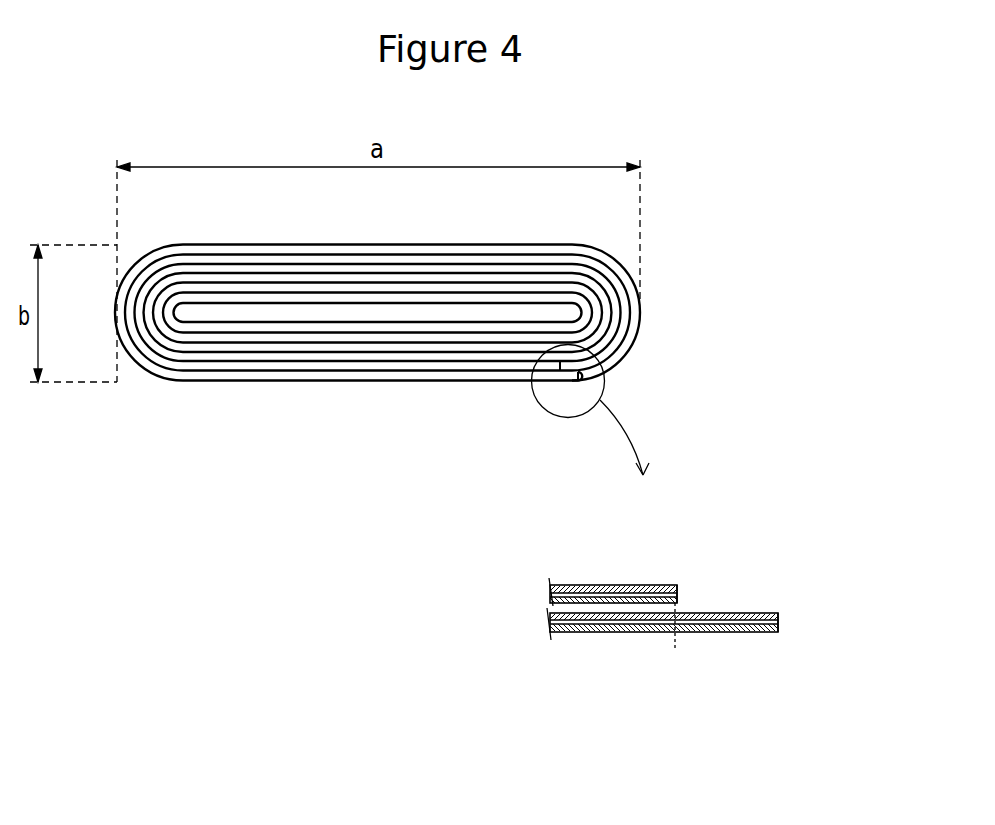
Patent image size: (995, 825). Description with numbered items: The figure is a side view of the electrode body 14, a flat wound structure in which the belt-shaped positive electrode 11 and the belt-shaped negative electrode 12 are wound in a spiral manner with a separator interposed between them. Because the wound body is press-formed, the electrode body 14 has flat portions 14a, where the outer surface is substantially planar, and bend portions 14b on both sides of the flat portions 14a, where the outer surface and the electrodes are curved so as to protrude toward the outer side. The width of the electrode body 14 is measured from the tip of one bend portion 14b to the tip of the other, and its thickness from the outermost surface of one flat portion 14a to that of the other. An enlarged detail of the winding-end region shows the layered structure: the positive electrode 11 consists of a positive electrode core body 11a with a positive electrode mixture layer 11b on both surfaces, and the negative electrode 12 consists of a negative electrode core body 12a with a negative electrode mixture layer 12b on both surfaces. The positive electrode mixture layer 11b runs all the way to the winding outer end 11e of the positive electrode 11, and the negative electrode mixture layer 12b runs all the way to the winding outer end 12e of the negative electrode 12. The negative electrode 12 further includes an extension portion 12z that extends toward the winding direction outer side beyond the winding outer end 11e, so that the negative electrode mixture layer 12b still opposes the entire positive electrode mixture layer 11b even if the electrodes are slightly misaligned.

The electrode body 14 is at (436, 319).
The flat portions 14a is at (232, 383).
The bend portions 14b is at (130, 354).
The positive electrode 11 is at (291, 383).
The negative electrode 12 is at (342, 383).
The winding outer end 11e is at (565, 383).
The winding outer end 12e is at (582, 381).
The positive electrode core body 11a is at (581, 585).
The positive electrode mixture layer 11b is at (650, 597).
The negative electrode core body 12a is at (587, 632).
The negative electrode mixture layer 12b is at (648, 624).
The extension portion 12z is at (729, 632).